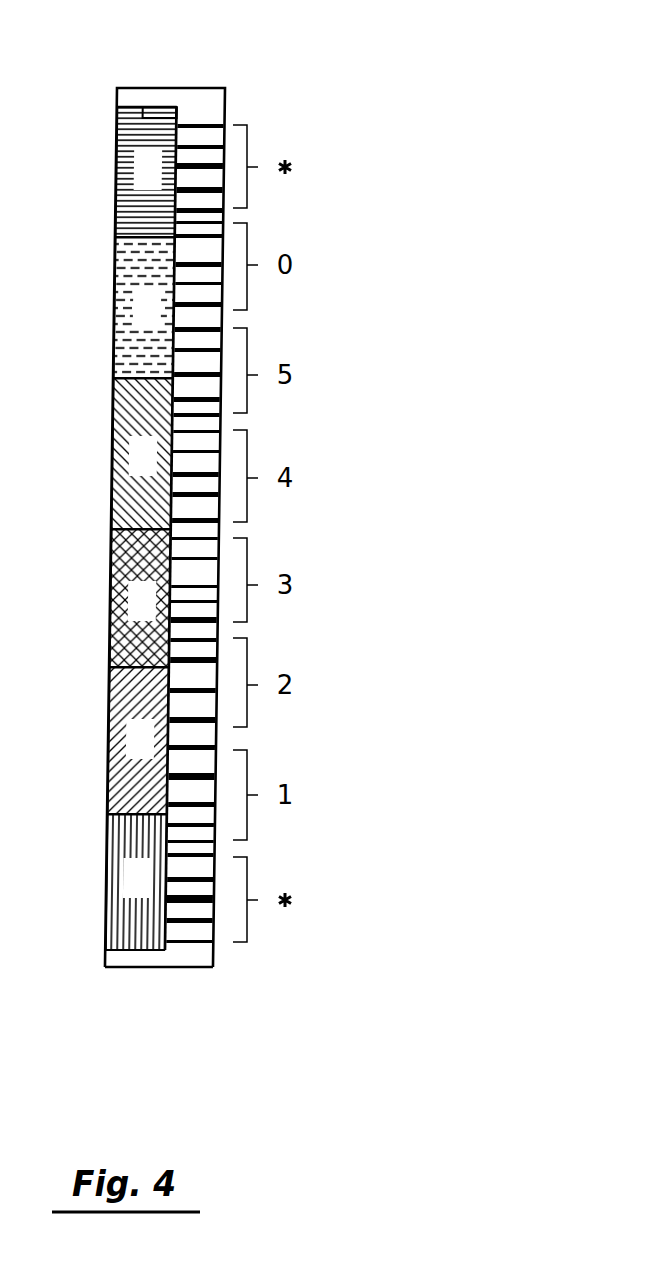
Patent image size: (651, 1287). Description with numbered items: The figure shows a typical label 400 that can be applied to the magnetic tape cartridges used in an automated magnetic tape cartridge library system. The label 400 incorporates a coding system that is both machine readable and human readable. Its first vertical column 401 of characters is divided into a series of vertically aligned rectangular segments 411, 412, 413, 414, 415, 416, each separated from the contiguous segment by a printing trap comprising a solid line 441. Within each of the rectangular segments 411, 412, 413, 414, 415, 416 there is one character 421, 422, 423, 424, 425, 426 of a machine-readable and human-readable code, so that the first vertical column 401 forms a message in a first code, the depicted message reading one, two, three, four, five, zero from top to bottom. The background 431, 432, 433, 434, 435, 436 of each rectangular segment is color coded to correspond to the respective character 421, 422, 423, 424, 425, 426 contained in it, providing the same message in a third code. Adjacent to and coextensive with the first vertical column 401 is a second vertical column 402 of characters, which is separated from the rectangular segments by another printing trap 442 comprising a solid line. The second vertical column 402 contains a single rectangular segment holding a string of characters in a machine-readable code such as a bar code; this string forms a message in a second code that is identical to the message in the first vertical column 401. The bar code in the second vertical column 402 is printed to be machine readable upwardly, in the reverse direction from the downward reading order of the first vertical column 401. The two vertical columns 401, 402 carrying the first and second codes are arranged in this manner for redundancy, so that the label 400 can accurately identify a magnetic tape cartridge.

The label 400 is at (205, 74).
The first vertical column 401 is at (147, 107).
The second vertical column 402 is at (188, 944).
The rectangular segment 411 is at (117, 138).
The rectangular segment 412 is at (117, 257).
The rectangular segment 413 is at (117, 416).
The rectangular segment 414 is at (110, 555).
The rectangular segment 415 is at (112, 699).
The rectangular segment 416 is at (106, 844).
The character 421 is at (140, 165).
The character 422 is at (128, 312).
The character 423 is at (124, 474).
The character 424 is at (130, 592).
The character 425 is at (125, 770).
The character 426 is at (106, 914).
The background 431 is at (118, 117).
The background 432 is at (118, 289).
The background 433 is at (120, 503).
The background 434 is at (120, 627).
The background 435 is at (115, 728).
The background 436 is at (112, 878).
The solid line 441 is at (133, 226).
The printing trap 442 is at (183, 113).